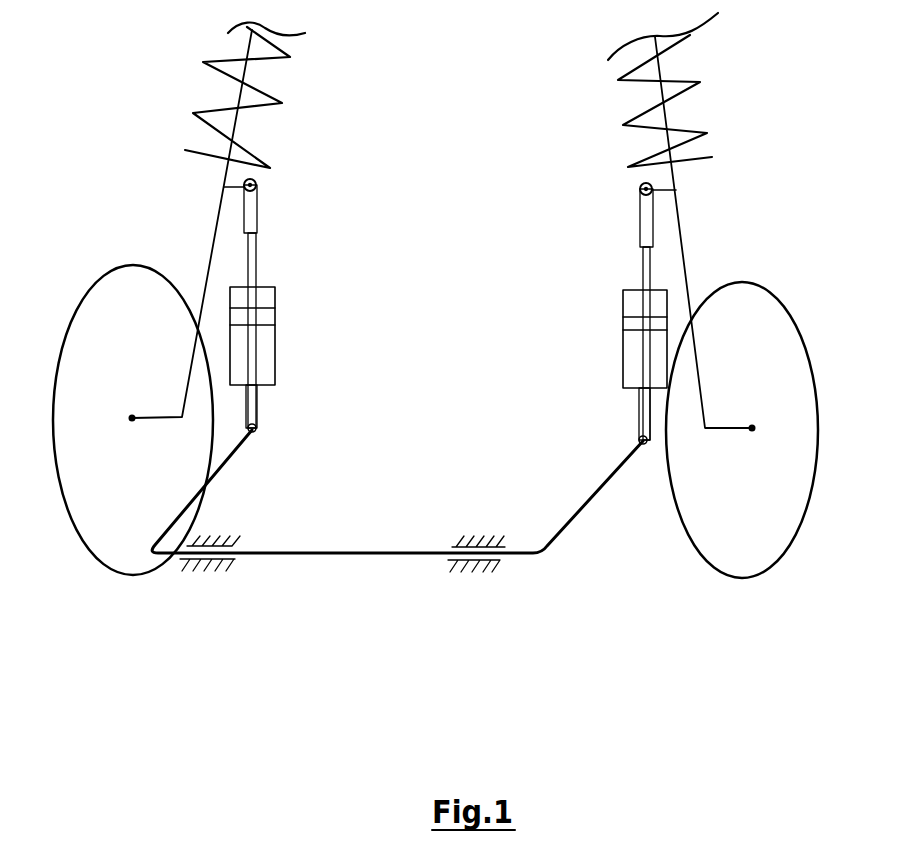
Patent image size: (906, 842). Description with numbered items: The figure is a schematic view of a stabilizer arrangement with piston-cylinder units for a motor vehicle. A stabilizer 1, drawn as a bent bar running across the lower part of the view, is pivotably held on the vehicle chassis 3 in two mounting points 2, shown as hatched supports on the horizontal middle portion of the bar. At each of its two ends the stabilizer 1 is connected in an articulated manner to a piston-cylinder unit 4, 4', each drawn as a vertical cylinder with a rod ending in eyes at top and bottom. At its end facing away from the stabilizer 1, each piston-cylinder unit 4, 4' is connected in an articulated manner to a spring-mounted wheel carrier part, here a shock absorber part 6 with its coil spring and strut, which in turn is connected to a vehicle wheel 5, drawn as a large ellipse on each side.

The stabilizer 1 is at (290, 552).
The mounting points 2 is at (200, 598).
The vehicle chassis 3 is at (203, 540).
The piston-cylinder unit 4 is at (599, 286).
The piston-cylinder unit 4' is at (298, 284).
The vehicle wheel 5 is at (98, 528).
The shock absorber part 6 is at (212, 250).